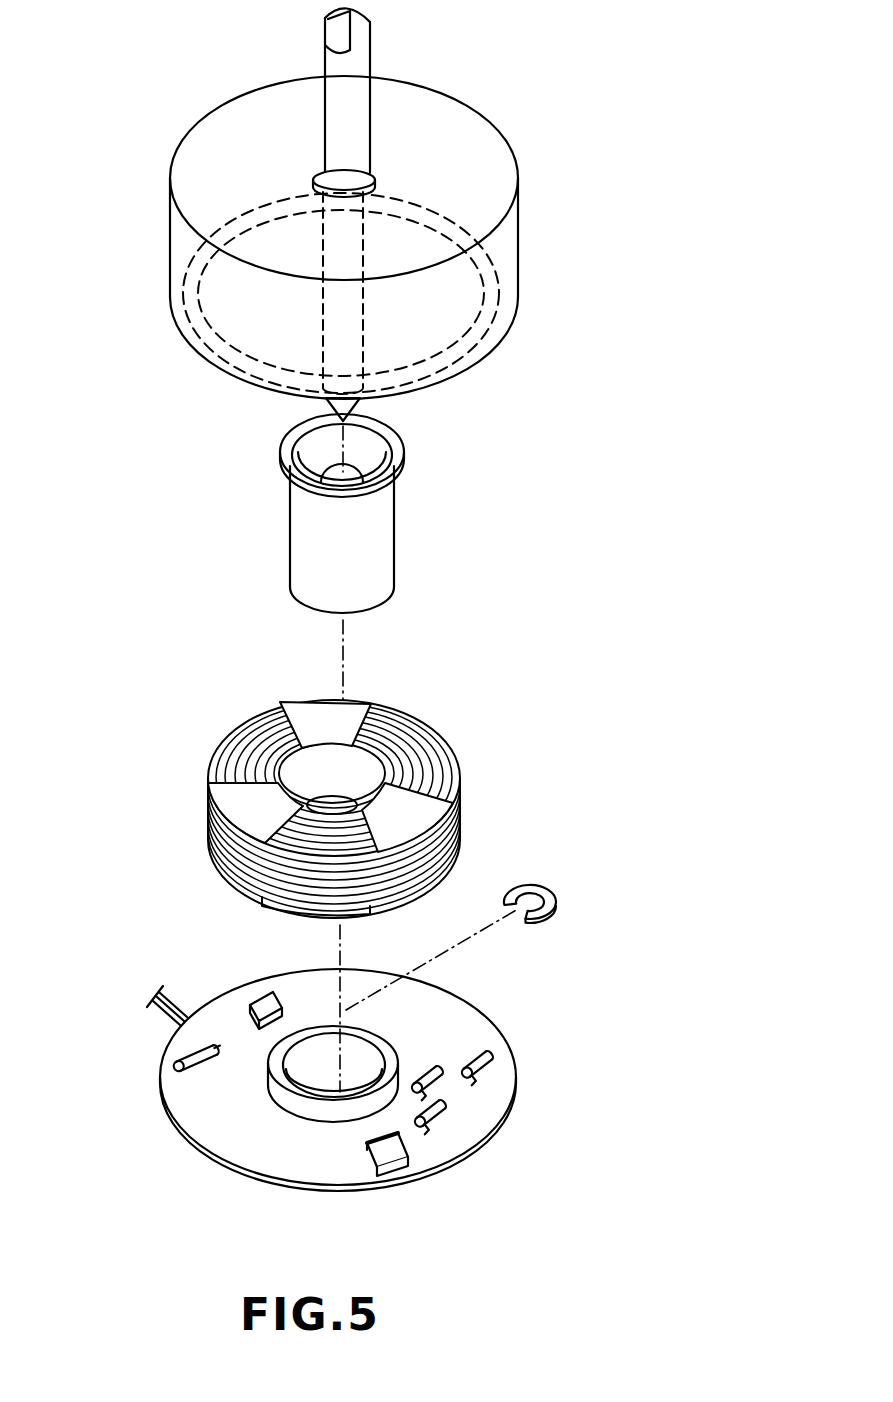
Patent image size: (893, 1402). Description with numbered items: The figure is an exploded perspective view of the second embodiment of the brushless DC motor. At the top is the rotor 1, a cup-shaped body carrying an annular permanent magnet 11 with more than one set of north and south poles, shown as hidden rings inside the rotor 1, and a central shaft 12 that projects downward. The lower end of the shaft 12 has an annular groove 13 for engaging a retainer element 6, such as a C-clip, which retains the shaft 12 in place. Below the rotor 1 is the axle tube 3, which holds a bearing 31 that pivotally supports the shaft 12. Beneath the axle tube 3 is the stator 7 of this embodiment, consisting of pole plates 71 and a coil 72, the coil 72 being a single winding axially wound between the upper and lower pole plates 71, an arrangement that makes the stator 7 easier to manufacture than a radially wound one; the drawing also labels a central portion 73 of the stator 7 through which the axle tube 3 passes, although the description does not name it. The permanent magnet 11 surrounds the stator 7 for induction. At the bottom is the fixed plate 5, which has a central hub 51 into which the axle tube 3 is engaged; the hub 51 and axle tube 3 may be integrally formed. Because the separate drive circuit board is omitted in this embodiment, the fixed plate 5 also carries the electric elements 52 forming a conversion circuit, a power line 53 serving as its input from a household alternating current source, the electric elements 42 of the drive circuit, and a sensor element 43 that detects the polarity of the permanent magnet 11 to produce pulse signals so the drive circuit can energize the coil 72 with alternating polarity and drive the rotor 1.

The rotor 1 is at (482, 128).
The annular permanent magnet 11 is at (482, 332).
The shaft 12 is at (355, 305).
The annular groove 13 is at (388, 403).
The axle tube 3 is at (331, 509).
The bearing 31 is at (310, 467).
The stator 7 is at (339, 782).
The pole plates 71 is at (432, 812).
The coil 72 is at (418, 735).
The core 73 is at (303, 775).
The retainer element 6 is at (549, 899).
The fixed plate 5 is at (480, 1038).
The hub 51 is at (322, 1082).
The electric elements 52 is at (450, 1076).
The power line 53 is at (152, 1000).
The electric elements 42 is at (262, 1003).
The sensor element 43 is at (395, 1170).